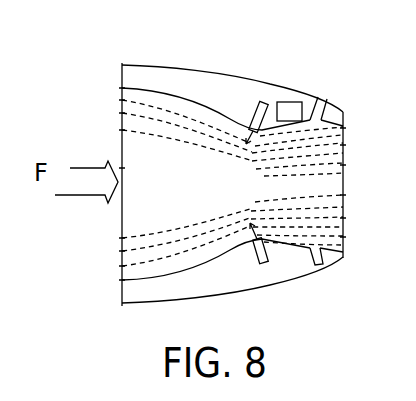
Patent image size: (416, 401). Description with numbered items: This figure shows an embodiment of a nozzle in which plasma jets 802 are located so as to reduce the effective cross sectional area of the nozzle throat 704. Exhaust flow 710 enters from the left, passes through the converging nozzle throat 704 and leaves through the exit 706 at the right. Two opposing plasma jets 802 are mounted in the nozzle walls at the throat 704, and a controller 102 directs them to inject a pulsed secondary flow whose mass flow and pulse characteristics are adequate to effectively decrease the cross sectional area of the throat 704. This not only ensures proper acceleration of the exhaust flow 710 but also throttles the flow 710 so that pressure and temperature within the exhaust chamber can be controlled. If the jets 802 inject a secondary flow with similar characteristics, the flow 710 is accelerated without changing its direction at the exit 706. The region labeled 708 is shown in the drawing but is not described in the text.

The controller 102 is at (297, 101).
The nozzle throat 704 is at (236, 125).
The exit 706 is at (345, 188).
The throat flow region 708 is at (221, 196).
The exhaust flow 710 is at (90, 162).
The plasma jets 802 is at (269, 96).